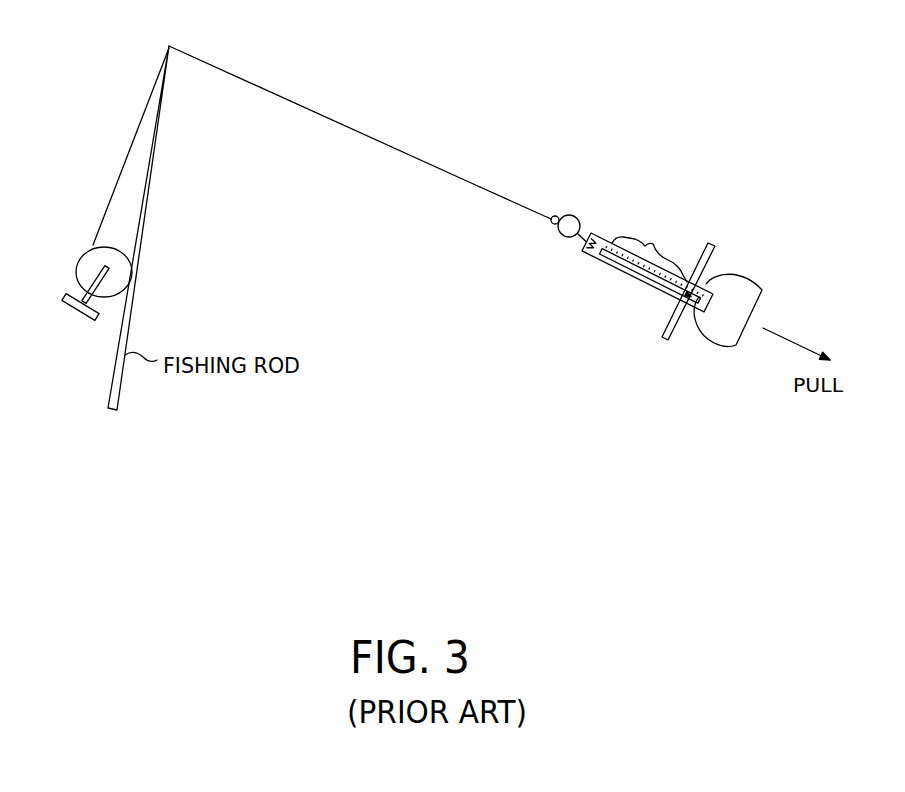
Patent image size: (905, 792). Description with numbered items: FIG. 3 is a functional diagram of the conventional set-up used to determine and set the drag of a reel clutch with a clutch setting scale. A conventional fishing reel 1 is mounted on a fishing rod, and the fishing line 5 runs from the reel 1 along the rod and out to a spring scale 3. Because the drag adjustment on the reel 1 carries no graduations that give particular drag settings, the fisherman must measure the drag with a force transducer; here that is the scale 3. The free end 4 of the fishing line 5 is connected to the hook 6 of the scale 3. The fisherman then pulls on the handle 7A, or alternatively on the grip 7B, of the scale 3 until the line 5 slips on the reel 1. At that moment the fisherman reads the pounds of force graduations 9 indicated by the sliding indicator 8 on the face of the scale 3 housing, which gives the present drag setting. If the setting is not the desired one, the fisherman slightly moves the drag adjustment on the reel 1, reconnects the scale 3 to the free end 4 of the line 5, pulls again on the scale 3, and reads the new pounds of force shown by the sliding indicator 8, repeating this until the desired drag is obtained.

The reel 1 is at (70, 250).
The spring scale 3 is at (630, 278).
The free end 4 is at (515, 197).
The fishing line 5 is at (335, 111).
The hook 6 is at (578, 217).
The handle 7A is at (752, 284).
The grip 7B is at (711, 257).
The sliding indicator 8 is at (690, 307).
The pounds of force graduations 9 is at (652, 243).